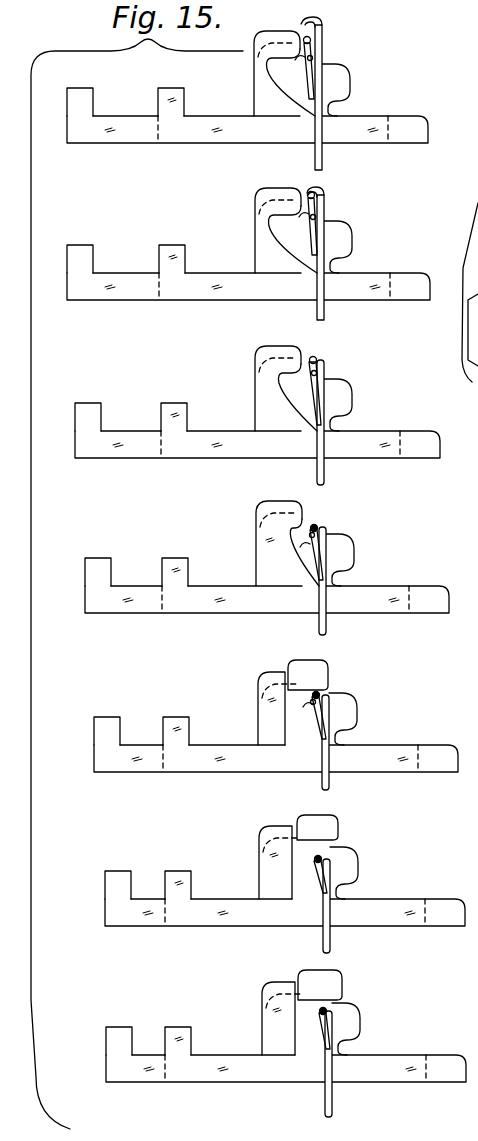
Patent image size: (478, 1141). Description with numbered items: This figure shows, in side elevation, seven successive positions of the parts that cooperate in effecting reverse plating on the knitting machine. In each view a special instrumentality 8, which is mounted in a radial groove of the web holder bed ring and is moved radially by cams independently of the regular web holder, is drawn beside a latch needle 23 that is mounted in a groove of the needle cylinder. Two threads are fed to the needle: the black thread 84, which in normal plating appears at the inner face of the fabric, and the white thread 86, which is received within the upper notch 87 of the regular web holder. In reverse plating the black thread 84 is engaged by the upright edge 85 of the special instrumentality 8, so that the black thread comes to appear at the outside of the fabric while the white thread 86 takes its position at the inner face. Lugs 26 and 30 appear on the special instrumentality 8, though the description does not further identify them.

The special instrumentality 8 is at (317, 1076).
The latch needle 23 is at (332, 1100).
The lug 26 is at (175, 1029).
The lug 30 is at (114, 1029).
The thread 84 is at (325, 1011).
The upright edge 85 is at (342, 981).
The white thread 86 is at (315, 702).
The upper notch 87 is at (313, 703).